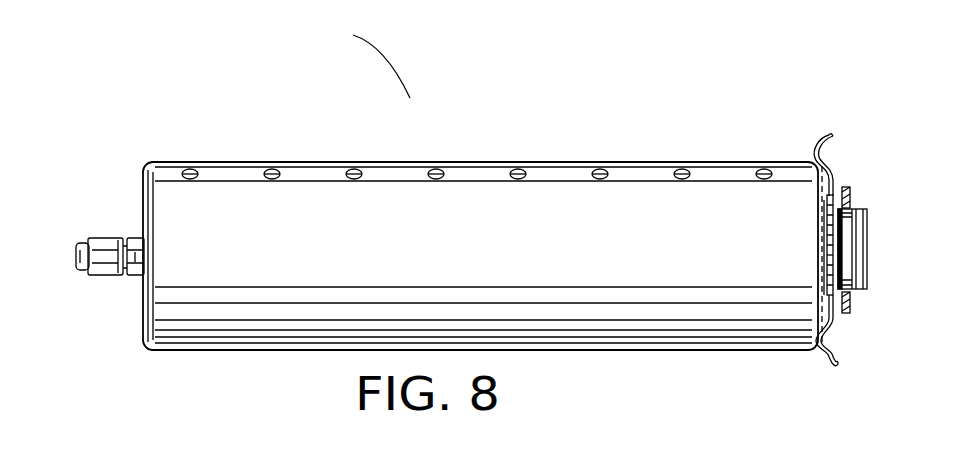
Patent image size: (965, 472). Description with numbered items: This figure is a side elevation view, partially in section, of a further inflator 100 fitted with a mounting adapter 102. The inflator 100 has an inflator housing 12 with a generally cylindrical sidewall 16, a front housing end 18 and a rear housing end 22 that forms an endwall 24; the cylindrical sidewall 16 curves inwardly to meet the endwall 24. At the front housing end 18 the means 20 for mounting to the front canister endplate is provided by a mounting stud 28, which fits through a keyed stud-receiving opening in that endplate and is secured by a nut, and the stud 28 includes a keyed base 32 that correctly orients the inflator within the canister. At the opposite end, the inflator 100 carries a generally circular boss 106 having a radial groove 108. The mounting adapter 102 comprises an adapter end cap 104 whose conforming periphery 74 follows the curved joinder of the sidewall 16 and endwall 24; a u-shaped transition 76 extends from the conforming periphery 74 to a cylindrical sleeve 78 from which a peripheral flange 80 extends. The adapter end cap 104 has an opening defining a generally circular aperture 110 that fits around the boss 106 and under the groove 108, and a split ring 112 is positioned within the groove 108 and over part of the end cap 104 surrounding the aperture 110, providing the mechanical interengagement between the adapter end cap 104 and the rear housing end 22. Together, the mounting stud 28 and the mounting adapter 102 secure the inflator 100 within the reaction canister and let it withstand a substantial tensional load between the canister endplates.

The inflator 100 is at (350, 63).
The inflator housing 12 is at (555, 163).
The cylindrical sidewall 16 is at (650, 165).
The front housing end 18 is at (141, 203).
The means for mounting 20 is at (92, 279).
The mounting stud 28 is at (103, 278).
The keyed base 32 is at (125, 276).
The mounting adapter 102 is at (827, 136).
The adapter end cap 104 is at (834, 170).
The split ring 112 is at (849, 192).
The boss 106 is at (828, 219).
The radial groove 108 is at (851, 236).
The rear housing end 22 is at (828, 240).
The endwall 24 is at (828, 272).
The aperture 110 is at (832, 300).
The conforming periphery 74 is at (832, 337).
The u-shaped transition 76 is at (816, 352).
The cylindrical sleeve 78 is at (828, 364).
The peripheral flange 80 is at (838, 365).